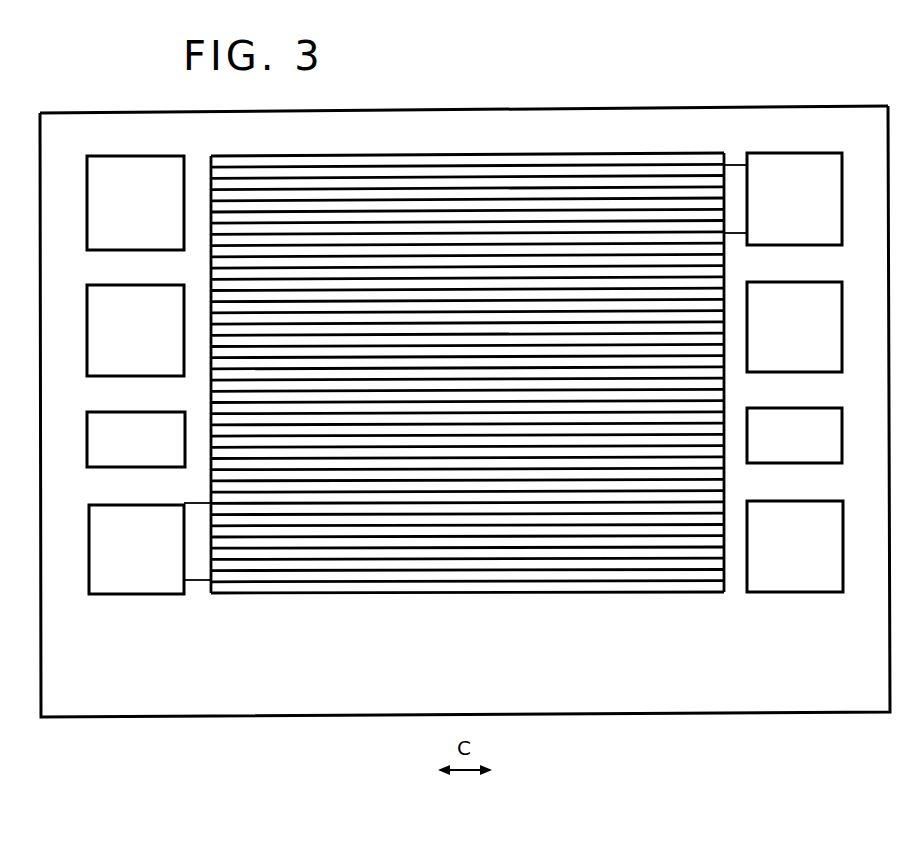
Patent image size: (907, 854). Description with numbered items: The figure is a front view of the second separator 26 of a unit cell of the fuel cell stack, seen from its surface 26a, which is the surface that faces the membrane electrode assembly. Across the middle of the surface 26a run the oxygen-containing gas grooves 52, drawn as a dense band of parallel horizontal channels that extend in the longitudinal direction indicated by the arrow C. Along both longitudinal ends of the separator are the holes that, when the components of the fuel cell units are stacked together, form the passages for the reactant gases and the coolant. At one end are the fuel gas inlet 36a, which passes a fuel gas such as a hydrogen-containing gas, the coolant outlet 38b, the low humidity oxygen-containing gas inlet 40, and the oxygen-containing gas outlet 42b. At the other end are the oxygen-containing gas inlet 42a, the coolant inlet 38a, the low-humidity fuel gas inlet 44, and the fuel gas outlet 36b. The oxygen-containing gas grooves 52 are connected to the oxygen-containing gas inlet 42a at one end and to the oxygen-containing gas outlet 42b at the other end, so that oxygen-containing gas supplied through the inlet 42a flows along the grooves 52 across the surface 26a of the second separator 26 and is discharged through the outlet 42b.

The second separator 26 is at (781, 85).
The surface 26a is at (597, 125).
The oxygen-containing gas grooves 52 is at (445, 172).
The fuel gas inlet 36a is at (135, 203).
The fuel gas outlet 36b is at (795, 546).
The coolant inlet 38a is at (794, 327).
The coolant outlet 38b is at (135, 330).
The low humidity oxygen-containing gas inlet 40 is at (136, 439).
The oxygen-containing gas inlet 42a is at (783, 199).
The oxygen-containing gas outlet 42b is at (150, 548).
The low-humidity fuel gas inlet 44 is at (794, 435).